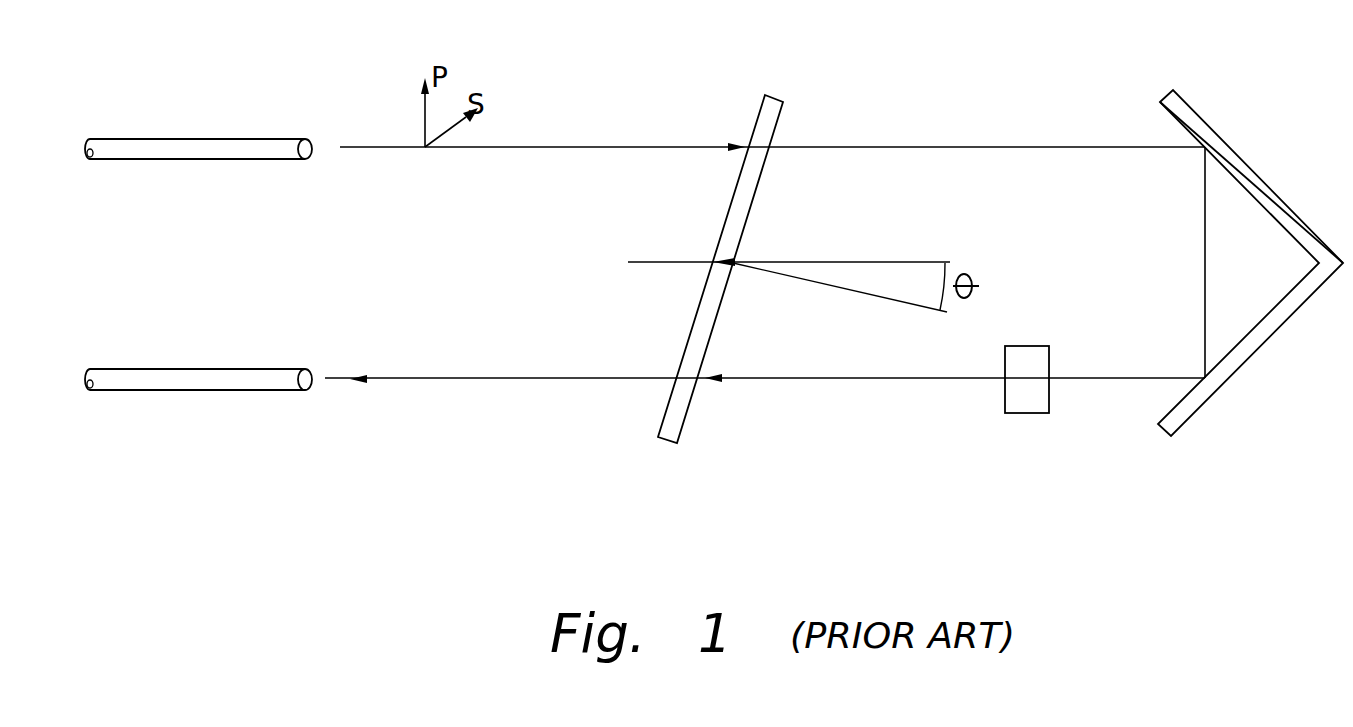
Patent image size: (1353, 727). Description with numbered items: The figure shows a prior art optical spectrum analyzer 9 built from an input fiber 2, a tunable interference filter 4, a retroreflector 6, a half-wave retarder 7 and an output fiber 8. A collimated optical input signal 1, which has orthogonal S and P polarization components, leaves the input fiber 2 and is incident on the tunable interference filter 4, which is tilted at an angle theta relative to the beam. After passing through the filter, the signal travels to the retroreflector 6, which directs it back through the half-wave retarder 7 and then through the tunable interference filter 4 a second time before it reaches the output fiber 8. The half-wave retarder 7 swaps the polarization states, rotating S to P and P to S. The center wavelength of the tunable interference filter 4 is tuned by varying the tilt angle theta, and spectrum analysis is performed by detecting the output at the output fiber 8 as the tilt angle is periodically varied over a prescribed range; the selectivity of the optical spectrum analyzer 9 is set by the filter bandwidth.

The collimated optical input signal 1 is at (765, 191).
The input fiber 2 is at (204, 150).
The tunable interference filter 4 is at (755, 118).
The retroreflector 6 is at (1268, 335).
The half-wave retarder 7 is at (1025, 413).
The output fiber 8 is at (198, 380).
The optical spectrum analyzer 9 is at (1280, 118).